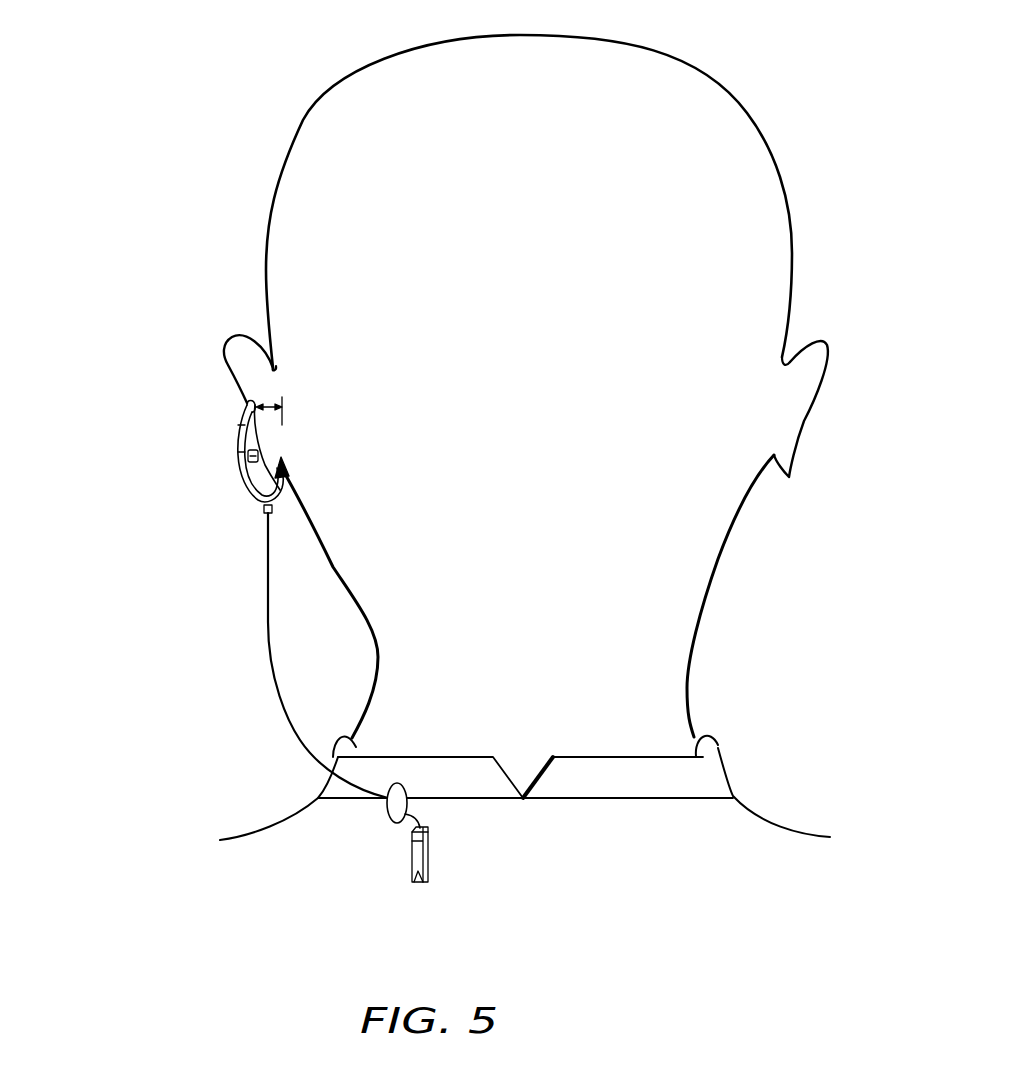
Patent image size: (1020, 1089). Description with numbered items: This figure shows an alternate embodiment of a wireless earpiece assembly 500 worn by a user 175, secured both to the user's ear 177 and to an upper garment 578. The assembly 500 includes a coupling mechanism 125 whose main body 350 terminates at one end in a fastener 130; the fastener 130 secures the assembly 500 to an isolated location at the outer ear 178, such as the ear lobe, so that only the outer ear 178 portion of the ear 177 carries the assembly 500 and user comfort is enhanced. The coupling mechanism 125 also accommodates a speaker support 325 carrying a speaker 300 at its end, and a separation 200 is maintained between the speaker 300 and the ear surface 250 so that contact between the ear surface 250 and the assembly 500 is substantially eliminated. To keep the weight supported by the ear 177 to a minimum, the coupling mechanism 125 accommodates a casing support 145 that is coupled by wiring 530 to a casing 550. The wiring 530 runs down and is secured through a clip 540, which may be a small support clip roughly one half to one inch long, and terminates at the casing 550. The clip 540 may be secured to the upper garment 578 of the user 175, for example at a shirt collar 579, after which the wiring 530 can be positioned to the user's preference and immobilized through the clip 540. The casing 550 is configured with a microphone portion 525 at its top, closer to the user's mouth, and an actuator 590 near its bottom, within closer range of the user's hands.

The user 175 is at (543, 86).
The ear 177 is at (244, 372).
The outer ear 178 is at (282, 470).
The fastener 130 is at (258, 453).
The separation 200 is at (284, 420).
The ear surface 250 is at (288, 407).
The speaker 300 is at (247, 406).
The speaker support 325 is at (238, 447).
The main body 350 is at (285, 480).
The casing support 145 is at (263, 507).
The coupling mechanism 125 is at (231, 462).
The wireless earpiece assembly 500 is at (282, 664).
The wiring 530 is at (268, 628).
The clip 540 is at (392, 807).
The microphone portion 525 is at (410, 840).
The actuator 590 is at (414, 885).
The casing 550 is at (446, 864).
The shirt collar 579 is at (435, 772).
The upper garment 578 is at (697, 841).